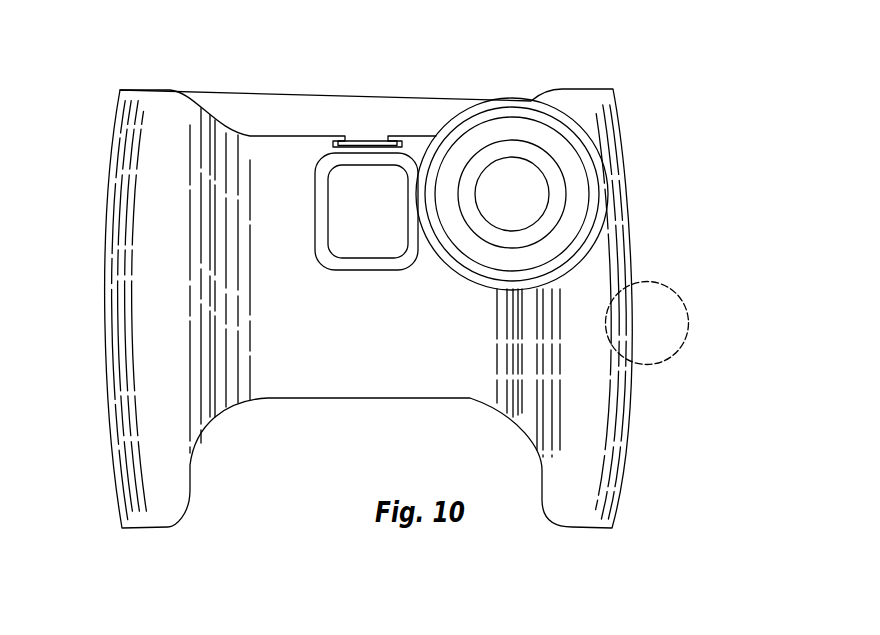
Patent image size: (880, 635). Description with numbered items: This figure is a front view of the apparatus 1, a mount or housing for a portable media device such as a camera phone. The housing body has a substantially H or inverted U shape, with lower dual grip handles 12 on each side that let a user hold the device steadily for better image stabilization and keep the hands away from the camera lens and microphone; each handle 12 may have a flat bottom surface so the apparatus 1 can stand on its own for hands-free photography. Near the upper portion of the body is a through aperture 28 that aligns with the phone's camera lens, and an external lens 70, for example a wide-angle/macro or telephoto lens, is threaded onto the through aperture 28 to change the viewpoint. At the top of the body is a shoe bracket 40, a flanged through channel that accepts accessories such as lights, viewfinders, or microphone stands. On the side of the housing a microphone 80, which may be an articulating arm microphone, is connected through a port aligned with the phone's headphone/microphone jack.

The apparatus 1 is at (648, 98).
The lower dual grip handles 12 is at (135, 431).
The through aperture 28 is at (366, 211).
The shoe bracket 40 is at (365, 137).
The lens 70 is at (510, 97).
The microphone 80 is at (673, 317).